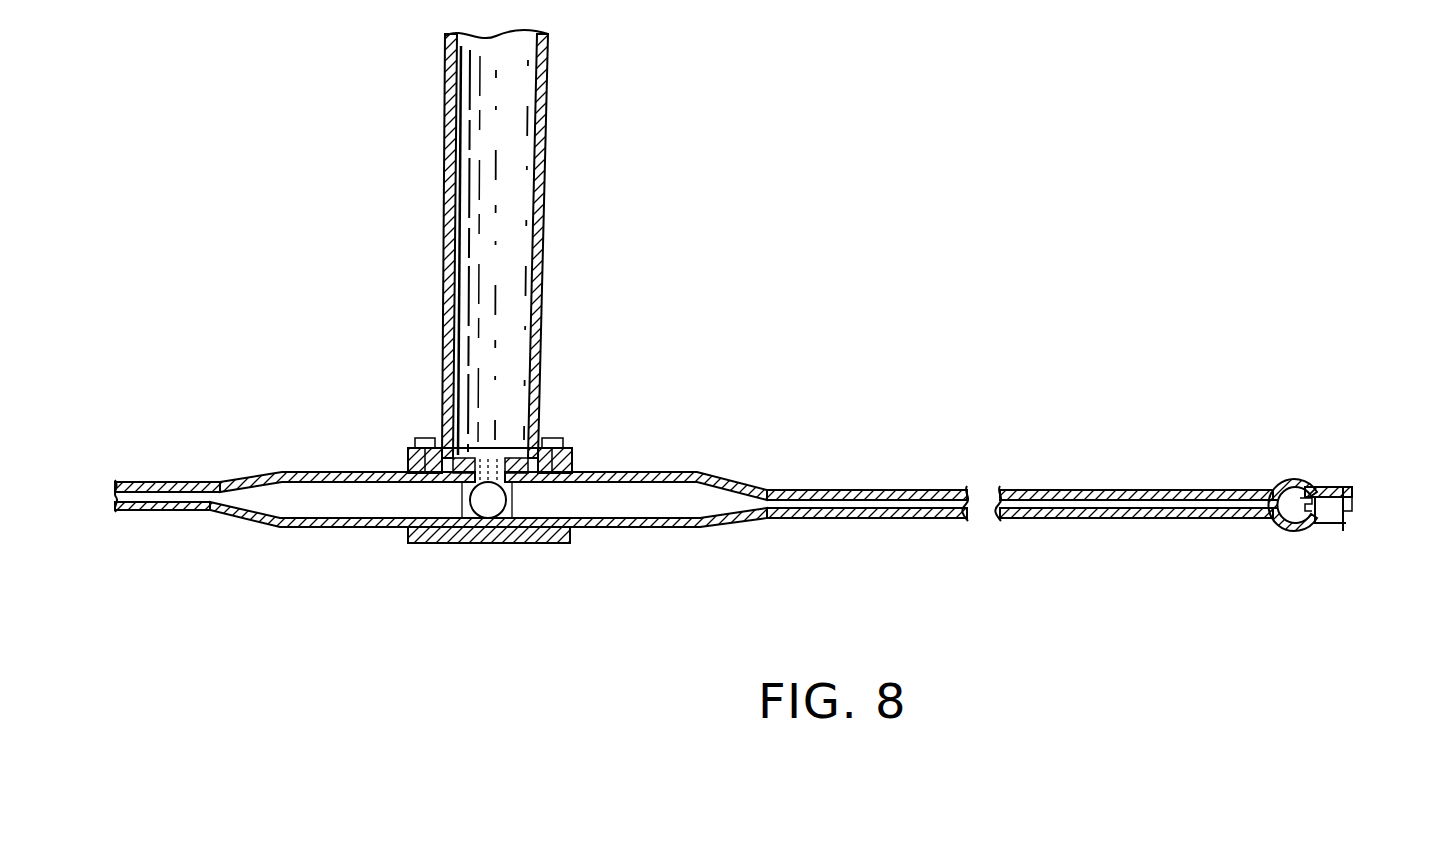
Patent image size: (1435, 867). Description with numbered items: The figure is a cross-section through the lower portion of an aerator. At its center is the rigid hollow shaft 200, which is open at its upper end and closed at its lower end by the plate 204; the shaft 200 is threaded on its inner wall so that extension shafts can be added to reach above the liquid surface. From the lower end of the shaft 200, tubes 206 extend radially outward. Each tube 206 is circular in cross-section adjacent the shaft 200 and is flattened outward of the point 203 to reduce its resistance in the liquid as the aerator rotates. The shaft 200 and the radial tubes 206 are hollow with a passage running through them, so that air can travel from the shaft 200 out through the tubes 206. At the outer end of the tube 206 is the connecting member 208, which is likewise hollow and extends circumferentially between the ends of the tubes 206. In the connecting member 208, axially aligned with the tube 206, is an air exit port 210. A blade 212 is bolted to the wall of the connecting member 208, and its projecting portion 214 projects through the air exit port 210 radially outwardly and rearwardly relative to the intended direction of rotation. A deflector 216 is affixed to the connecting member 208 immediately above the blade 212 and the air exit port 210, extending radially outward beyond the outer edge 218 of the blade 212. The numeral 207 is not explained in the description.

The hollow shaft 200 is at (549, 240).
The point 203 is at (277, 527).
The plate 204 is at (503, 545).
The tubes 206 is at (141, 482).
The tube end junction 207 is at (1249, 489).
The connecting member 208 is at (1297, 478).
The air exit port 210 is at (1277, 528).
The blades 212 is at (1344, 531).
The projecting portion 214 is at (1330, 521).
The deflectors 216 is at (1338, 487).
The outer edge 218 is at (1351, 507).